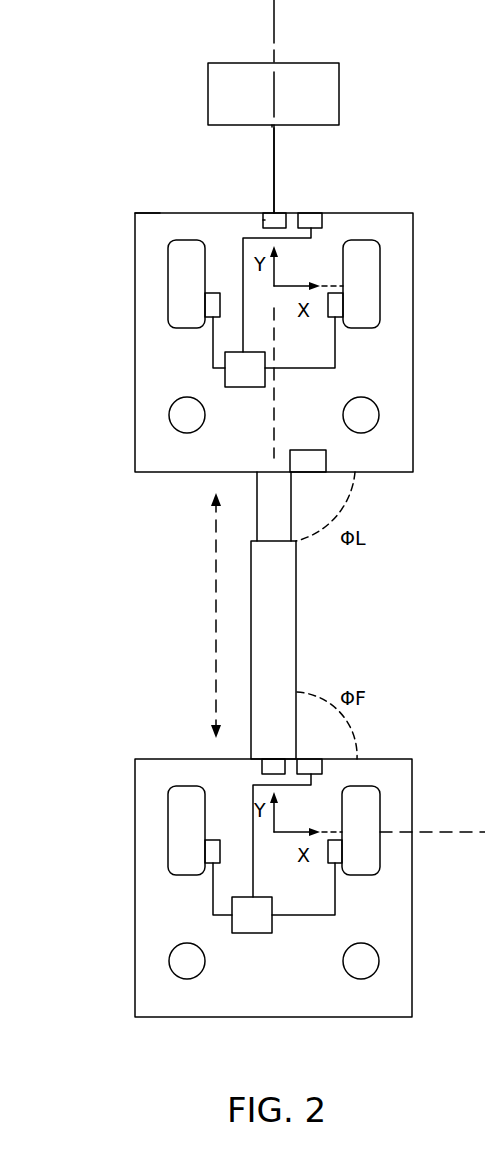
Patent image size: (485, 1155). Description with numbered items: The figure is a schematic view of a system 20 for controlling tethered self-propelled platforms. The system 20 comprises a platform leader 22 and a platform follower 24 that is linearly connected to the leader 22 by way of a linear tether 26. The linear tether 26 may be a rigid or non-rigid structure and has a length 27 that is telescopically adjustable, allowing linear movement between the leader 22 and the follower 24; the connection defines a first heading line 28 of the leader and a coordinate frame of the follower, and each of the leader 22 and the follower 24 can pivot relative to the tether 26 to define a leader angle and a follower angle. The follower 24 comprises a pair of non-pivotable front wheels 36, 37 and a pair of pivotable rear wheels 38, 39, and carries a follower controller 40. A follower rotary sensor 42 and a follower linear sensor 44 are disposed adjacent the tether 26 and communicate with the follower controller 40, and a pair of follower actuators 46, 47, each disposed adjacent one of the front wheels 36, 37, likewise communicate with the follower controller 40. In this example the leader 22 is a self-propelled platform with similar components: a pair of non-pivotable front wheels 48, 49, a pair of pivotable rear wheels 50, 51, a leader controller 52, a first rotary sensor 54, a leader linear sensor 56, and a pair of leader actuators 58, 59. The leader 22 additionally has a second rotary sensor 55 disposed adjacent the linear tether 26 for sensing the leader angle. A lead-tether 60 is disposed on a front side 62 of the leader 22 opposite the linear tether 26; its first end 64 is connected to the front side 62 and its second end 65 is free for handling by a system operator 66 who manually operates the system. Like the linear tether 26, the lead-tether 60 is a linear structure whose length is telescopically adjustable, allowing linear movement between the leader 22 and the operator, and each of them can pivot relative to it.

The system 20 is at (121, 72).
The platform leader 22 is at (135, 443).
The platform follower 24 is at (135, 988).
The linear tether 26 is at (296, 610).
The length 27 is at (216, 597).
The first heading line 28 is at (274, 24).
The non-pivotable front wheel 36 is at (168, 813).
The non-pivotable front wheel 37 is at (380, 805).
The pivotable rear wheel 38 is at (170, 950).
The pivotable rear wheel 39 is at (379, 950).
The follower controller 40 is at (252, 915).
The follower rotary sensor 42 is at (322, 765).
The follower linear sensor 44 is at (262, 767).
The follower actuator 46 is at (213, 840).
The follower actuator 47 is at (335, 863).
The non-pivotable front wheel 48 is at (168, 268).
The non-pivotable front wheel 49 is at (380, 258).
The pivotable rear wheel 50 is at (170, 405).
The pivotable rear wheel 51 is at (379, 405).
The leader controller 52 is at (245, 369).
The first rotary sensor 54 is at (322, 220).
The second rotary sensor 55 is at (326, 460).
The leader linear sensor 56 is at (263, 220).
The leader actuator 58 is at (215, 293).
The leader actuator 59 is at (335, 318).
The lead-tether 60 is at (275, 155).
The front side 62 is at (150, 213).
The first end 64 is at (272, 212).
The second end 65 is at (272, 125).
The system operator 66 is at (339, 82).